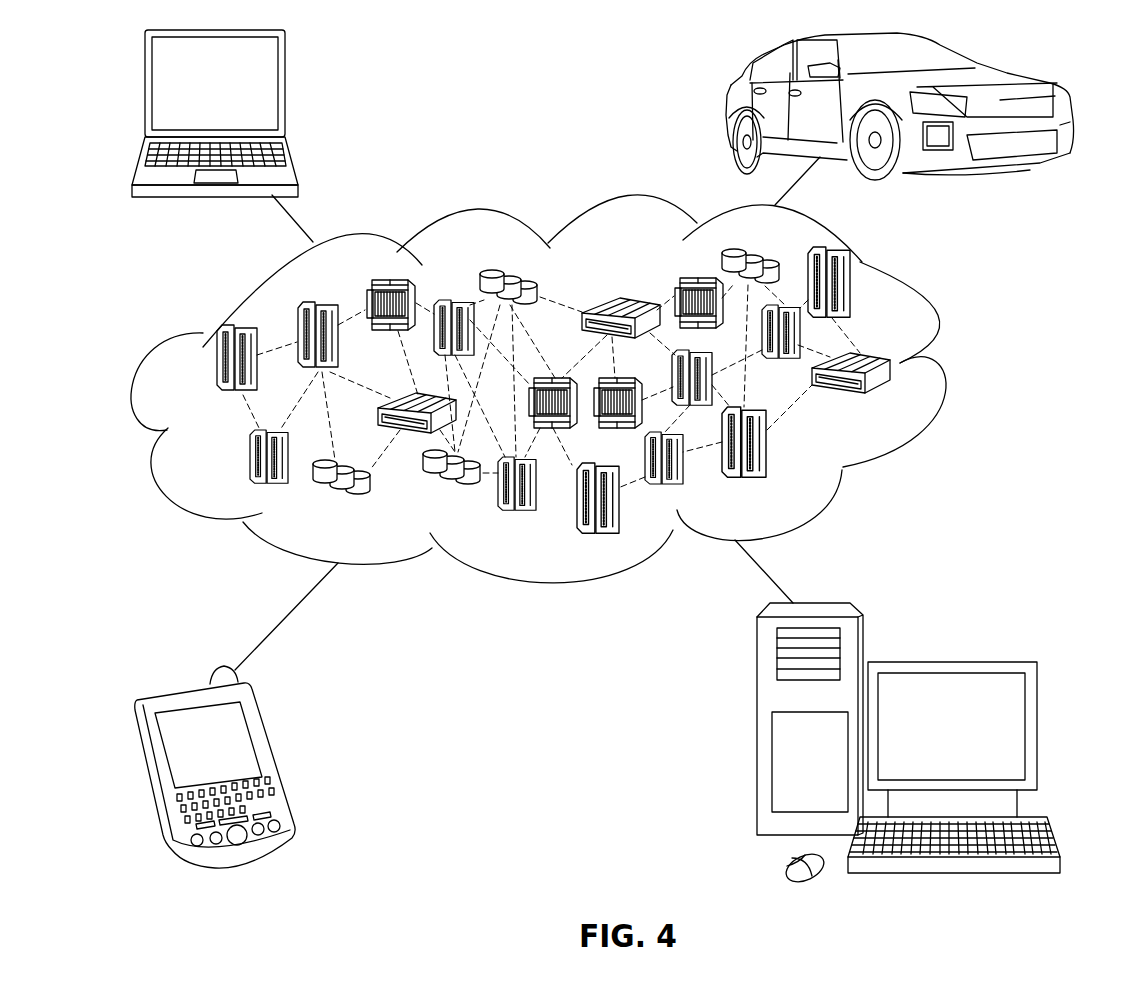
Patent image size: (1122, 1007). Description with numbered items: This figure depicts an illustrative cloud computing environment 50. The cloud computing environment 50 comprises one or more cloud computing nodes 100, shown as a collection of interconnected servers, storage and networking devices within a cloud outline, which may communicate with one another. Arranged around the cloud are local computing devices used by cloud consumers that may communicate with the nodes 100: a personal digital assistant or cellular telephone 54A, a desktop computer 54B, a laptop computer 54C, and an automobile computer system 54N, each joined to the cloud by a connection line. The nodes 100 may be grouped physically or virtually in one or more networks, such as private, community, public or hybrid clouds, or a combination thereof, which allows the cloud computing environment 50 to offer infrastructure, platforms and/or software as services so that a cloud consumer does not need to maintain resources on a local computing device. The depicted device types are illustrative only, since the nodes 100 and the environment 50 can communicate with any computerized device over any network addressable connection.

The personal digital assistant or cellular telephone 54A is at (273, 757).
The desktop computer 54B is at (948, 660).
The laptop computer 54C is at (285, 92).
The automobile computer system 54N is at (727, 107).
The cloud computing environment 50 is at (950, 370).
The cloud computing nodes 100 is at (888, 398).